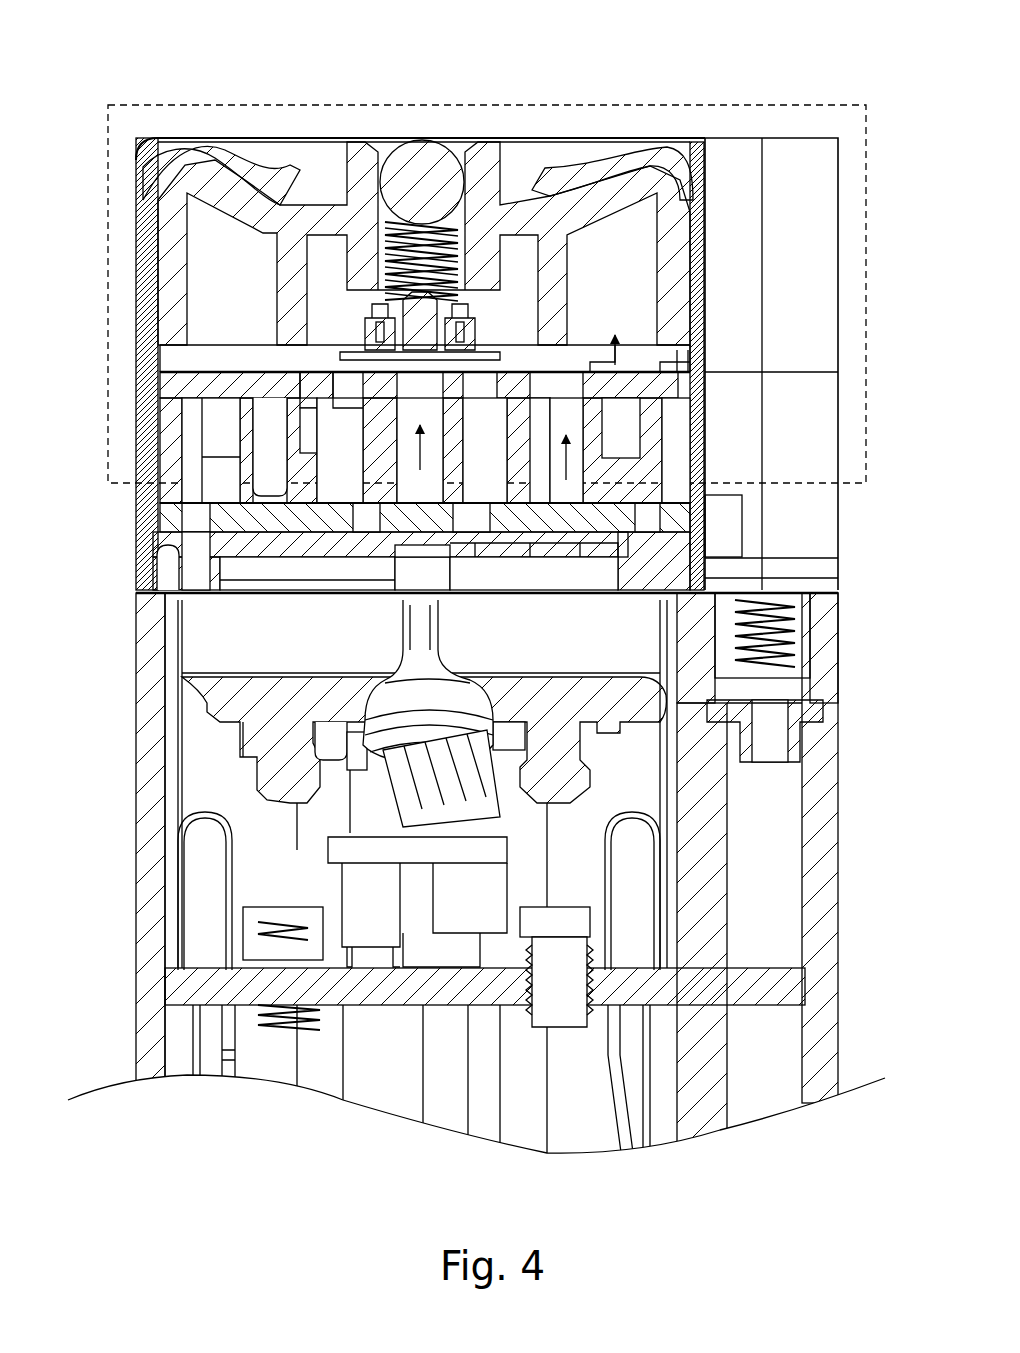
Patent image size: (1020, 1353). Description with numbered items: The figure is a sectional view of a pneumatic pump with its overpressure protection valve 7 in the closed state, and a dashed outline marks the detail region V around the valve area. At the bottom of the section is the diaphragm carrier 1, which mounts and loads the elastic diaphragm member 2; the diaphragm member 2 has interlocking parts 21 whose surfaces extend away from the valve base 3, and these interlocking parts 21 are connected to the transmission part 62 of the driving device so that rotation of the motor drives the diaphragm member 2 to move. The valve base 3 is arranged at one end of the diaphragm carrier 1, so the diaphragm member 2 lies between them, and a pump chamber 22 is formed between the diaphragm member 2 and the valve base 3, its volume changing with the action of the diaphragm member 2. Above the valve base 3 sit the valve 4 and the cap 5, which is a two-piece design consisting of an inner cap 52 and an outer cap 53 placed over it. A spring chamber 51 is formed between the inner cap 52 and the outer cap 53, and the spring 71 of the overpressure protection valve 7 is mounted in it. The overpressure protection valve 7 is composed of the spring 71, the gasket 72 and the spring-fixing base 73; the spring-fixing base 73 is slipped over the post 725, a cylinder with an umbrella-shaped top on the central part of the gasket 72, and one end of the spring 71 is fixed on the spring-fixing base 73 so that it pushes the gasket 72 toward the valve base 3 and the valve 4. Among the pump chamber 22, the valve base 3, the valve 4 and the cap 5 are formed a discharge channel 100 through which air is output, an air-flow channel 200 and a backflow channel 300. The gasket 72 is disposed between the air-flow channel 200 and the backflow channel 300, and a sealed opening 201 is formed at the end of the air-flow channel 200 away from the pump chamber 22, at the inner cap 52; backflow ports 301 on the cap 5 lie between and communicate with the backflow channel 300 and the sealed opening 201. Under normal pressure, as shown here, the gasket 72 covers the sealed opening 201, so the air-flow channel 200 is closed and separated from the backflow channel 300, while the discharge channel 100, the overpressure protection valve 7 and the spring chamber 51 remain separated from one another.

The diaphragm carrier 1 is at (845, 625).
The diaphragm member 2 is at (238, 748).
The valve base 3 is at (155, 556).
The valve 4 is at (158, 518).
The cap 5 is at (363, 364).
The overpressure protection valve 7 is at (435, 214).
The interlocking parts 21 is at (290, 812).
The pump chamber 22 is at (210, 635).
The spring chamber 51 is at (430, 182).
The inner cap 52 is at (160, 378).
The outer cap 53 is at (158, 215).
The transmission part 62 is at (400, 810).
The spring 71 is at (462, 262).
The gasket 72 is at (470, 325).
The spring-fixing base 73 is at (480, 300).
The discharge channel 100 is at (560, 417).
The air-flow channel 200 is at (530, 445).
The sealed opening 201 is at (520, 360).
The backflow channel 300 is at (340, 445).
The backflow ports 301 is at (310, 415).
The post 725 is at (425, 310).
The detail region V is at (652, 105).